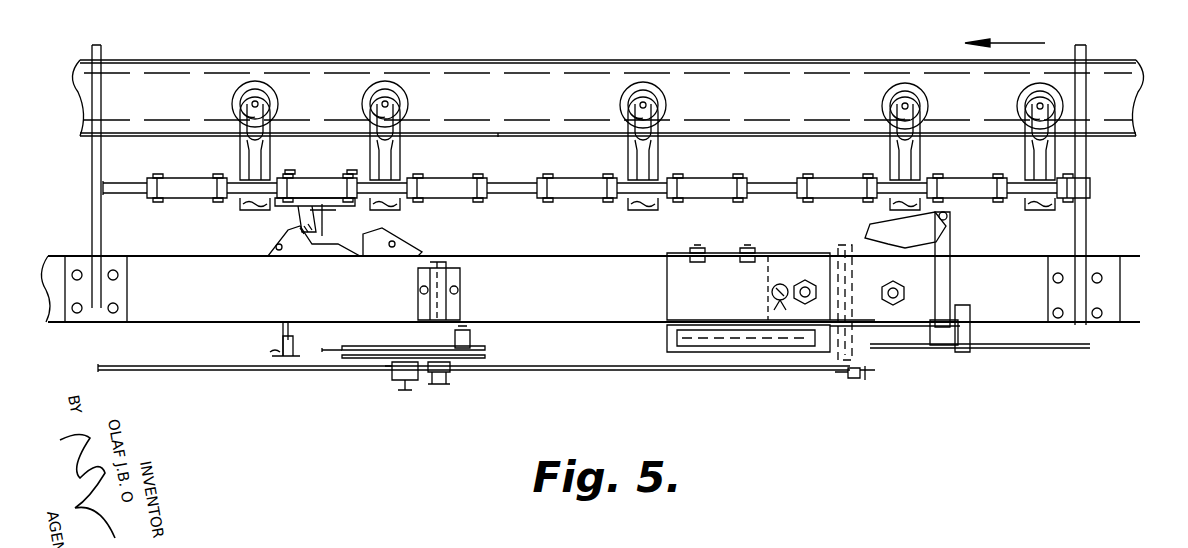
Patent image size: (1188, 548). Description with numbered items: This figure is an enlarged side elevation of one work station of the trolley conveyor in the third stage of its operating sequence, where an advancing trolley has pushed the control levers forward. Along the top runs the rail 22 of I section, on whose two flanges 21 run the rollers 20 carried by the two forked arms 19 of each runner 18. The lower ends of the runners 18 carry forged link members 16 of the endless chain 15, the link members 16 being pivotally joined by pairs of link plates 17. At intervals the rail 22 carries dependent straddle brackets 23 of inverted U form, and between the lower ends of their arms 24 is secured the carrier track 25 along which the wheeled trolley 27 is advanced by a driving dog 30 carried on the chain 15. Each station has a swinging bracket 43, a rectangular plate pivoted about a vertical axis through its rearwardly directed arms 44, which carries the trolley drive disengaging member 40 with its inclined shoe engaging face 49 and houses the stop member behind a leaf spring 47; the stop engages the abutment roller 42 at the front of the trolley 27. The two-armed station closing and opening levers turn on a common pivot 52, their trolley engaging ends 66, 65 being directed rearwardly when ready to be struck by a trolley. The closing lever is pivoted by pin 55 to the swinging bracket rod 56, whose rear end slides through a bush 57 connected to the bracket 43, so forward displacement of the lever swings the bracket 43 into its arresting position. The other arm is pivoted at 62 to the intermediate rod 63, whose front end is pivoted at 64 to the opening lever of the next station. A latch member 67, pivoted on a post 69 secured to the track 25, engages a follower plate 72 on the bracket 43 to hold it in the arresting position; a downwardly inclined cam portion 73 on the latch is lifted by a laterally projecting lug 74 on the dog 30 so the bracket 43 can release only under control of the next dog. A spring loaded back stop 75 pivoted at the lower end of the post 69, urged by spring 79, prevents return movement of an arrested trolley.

The endless chain 15 is at (596, 190).
The link member 16 is at (232, 198).
The link plate 17 is at (172, 158).
The runner 18 is at (241, 152).
The arm 19 is at (243, 115).
The roller 20 is at (279, 100).
The flange 21 is at (502, 136).
The rail 22 is at (548, 89).
The straddle bracket 23 is at (102, 162).
The arm 24 is at (95, 318).
The carrier track 25 is at (228, 314).
The wheeled trolley 27 is at (301, 334).
The driving dog 30 is at (322, 198).
The trolley drive disengaging member 40 is at (668, 254).
The abutment roller 42 is at (290, 358).
The swinging bracket 43 is at (667, 278).
The rearwardly directed arm 44 is at (865, 328).
The leaf spring 47 is at (714, 335).
The shoe engaging face 49 is at (710, 254).
The common pivot 52 is at (437, 262).
The pivot pin 55 is at (404, 388).
The swinging bracket rod 56 is at (528, 372).
The bush 57 is at (840, 376).
The pivot 62 is at (442, 380).
The intermediate rod 63 is at (179, 368).
The pivot 64 is at (466, 332).
The trolley engaging end 65 is at (350, 344).
The trolley engaging end 66 is at (338, 352).
The latch member 67 is at (904, 252).
The post 69 is at (950, 246).
The follower plate 72 is at (838, 252).
The cam portion 73 is at (880, 228).
The lug 74 is at (310, 230).
The back stop 75 is at (900, 350).
The spring 79 is at (937, 292).